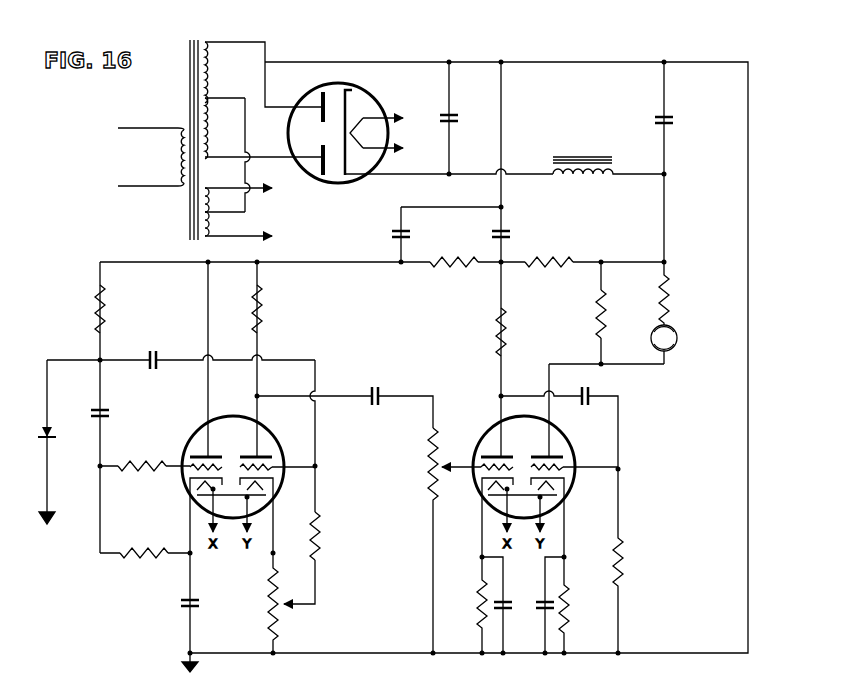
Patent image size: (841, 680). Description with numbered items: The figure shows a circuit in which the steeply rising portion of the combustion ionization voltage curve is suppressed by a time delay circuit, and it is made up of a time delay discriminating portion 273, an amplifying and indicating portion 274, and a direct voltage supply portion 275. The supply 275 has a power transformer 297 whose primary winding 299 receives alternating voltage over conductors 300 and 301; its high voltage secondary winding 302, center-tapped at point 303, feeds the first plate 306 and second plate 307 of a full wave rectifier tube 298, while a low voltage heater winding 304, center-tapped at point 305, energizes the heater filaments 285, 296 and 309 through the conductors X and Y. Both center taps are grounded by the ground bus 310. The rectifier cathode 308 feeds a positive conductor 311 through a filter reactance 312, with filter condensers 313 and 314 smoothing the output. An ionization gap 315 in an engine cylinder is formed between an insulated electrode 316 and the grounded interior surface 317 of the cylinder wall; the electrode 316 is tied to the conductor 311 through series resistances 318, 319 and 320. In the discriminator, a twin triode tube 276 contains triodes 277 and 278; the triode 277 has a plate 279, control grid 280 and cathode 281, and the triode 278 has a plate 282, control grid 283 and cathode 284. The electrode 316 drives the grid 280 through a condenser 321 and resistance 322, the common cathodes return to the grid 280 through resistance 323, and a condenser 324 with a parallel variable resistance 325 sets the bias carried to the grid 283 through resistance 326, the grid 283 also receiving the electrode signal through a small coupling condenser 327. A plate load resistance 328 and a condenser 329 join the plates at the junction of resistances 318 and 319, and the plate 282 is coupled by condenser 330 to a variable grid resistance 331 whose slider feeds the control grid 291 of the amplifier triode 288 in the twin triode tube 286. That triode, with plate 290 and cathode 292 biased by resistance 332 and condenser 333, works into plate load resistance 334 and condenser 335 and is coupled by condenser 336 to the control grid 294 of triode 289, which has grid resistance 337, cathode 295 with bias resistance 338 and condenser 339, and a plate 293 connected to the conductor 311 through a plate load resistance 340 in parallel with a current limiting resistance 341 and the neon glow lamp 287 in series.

The time delay discriminating portion 273 is at (314, 352).
The amplifying and indicating portion 274 is at (466, 383).
The direct voltage supply portion 275 is at (426, 54).
The vacuum tube 276 is at (240, 416).
The triode 277 is at (192, 463).
The triode 278 is at (268, 463).
The plate 279 is at (203, 455).
The control grid 280 is at (192, 472).
The cathode 281 is at (197, 484).
The plate 282 is at (263, 455).
The control grid 283 is at (273, 476).
The cathode 284 is at (263, 485).
The heater filament 285 is at (198, 496).
The vacuum tube 286 is at (532, 418).
The neon glow lamp 287 is at (679, 336).
The triode 288 is at (484, 463).
The triode 289 is at (565, 463).
The plate 290 is at (495, 455).
The control grid 291 is at (484, 478).
The cathode 292 is at (490, 486).
The plate 293 is at (558, 455).
The control grid 294 is at (566, 476).
The cathode 295 is at (555, 484).
The heater filament 296 is at (489, 496).
The power transformer 297 is at (190, 42).
The vacuum tube 298 is at (352, 182).
The primary winding 299 is at (178, 158).
The conductor 300 is at (162, 128).
The conductor 301 is at (162, 187).
The high voltage secondary winding 302 is at (212, 66).
The center tap 303 is at (210, 108).
The low voltage heater winding 304 is at (211, 208).
The center tap 305 is at (214, 216).
The first plate 306 is at (320, 95).
The second plate 307 is at (324, 176).
The cathode 308 is at (352, 104).
The heater filament 309 is at (368, 150).
The ground bus 310 is at (575, 62).
The positive conductor 311 is at (667, 215).
The filter reactance 312 is at (598, 157).
The filter condenser 313 is at (455, 118).
The filter condenser 314 is at (673, 121).
The ionization gap 315 is at (38, 433).
The insulated electrode 316 is at (45, 430).
The interior surface 317 is at (44, 440).
The resistance 318 is at (96, 310).
The resistance 319 is at (456, 258).
The resistance 320 is at (552, 260).
The condenser 321 is at (96, 410).
The resistance 322 is at (145, 463).
The resistance 323 is at (140, 558).
The condenser 324 is at (180, 603).
The variable resistance 325 is at (283, 606).
The resistance 326 is at (320, 540).
The coupling condenser 327 is at (153, 351).
The plate load resistance 328 is at (253, 312).
The condenser 329 is at (390, 234).
The coupling condenser 330 is at (377, 405).
The variable grid resistance 331 is at (430, 464).
The cathode bias resistance 332 is at (478, 602).
The condenser 333 is at (508, 604).
The plate load resistance 334 is at (505, 335).
The condenser 335 is at (510, 234).
The coupling condenser 336 is at (587, 388).
The grid resistance 337 is at (623, 560).
The cathode bias resistance 338 is at (568, 610).
The condenser 339 is at (543, 612).
The plate load resistance 340 is at (597, 312).
The current limiting resistance 341 is at (670, 300).